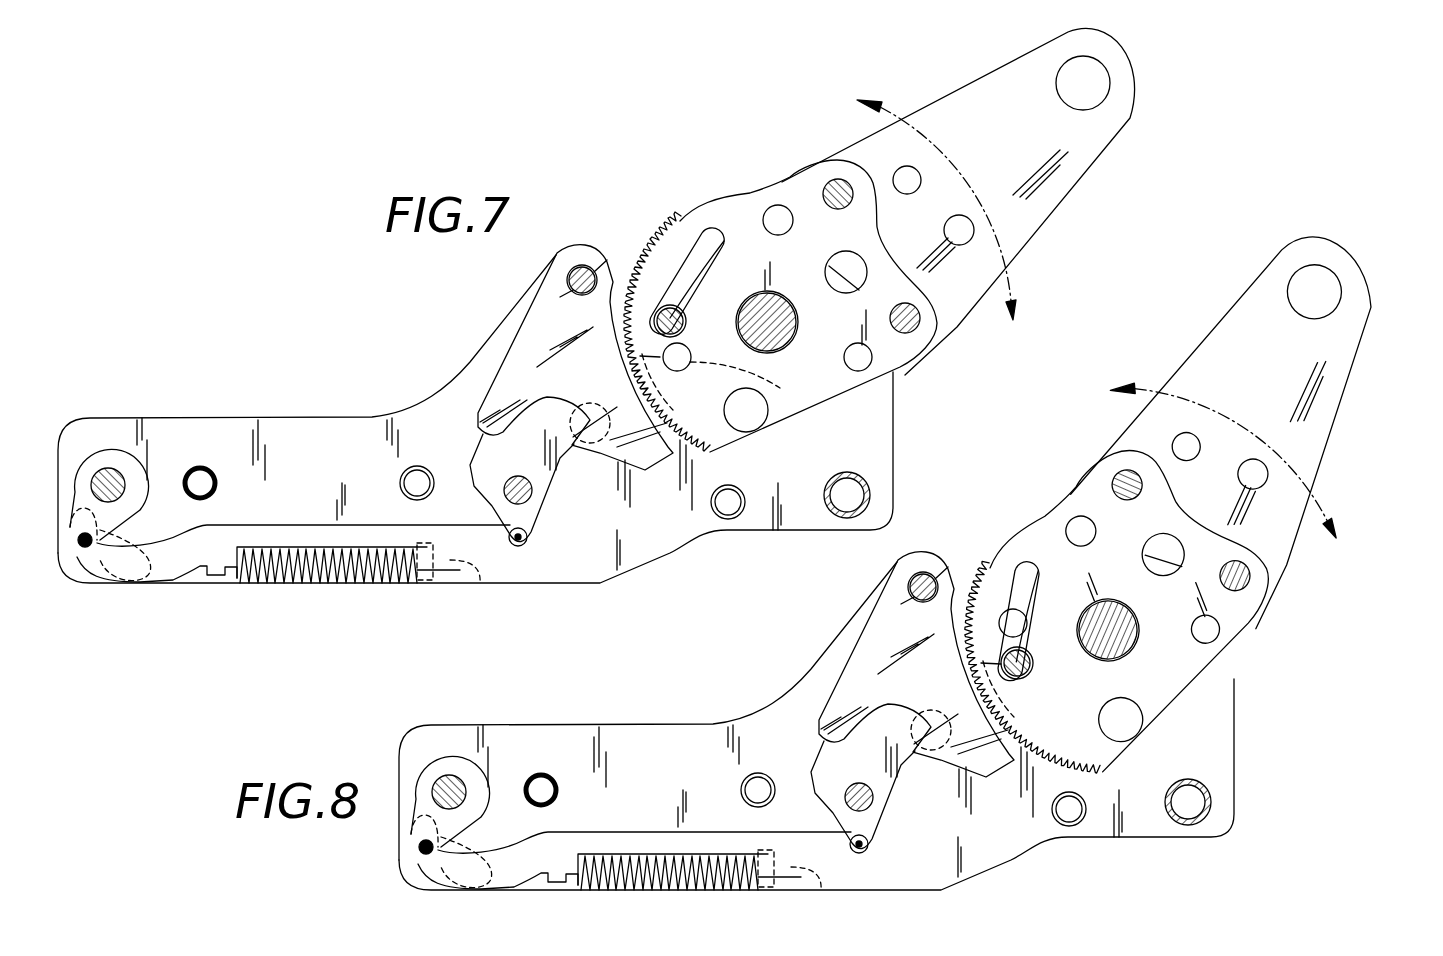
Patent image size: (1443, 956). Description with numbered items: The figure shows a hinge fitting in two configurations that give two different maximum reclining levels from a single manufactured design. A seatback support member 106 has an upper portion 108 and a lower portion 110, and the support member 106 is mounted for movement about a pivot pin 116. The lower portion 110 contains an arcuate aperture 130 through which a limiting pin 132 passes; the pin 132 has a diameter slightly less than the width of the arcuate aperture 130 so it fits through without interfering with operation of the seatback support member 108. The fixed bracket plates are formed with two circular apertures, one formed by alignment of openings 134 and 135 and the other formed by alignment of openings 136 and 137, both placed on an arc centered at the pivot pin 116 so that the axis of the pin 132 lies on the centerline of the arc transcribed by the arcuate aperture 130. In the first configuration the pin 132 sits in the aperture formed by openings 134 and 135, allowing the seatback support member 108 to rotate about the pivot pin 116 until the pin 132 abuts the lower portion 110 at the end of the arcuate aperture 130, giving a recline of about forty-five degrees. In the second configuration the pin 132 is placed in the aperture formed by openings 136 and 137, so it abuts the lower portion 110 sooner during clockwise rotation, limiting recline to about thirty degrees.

In FIG. 7, the seatback support member 106 is at (1093, 134).
In FIG. 8, the seatback support member 106 is at (1315, 351).
In FIG. 7, the upper portion 108 is at (907, 95).
In FIG. 8, the upper portion 108 is at (1143, 318).
In FIG. 7, the lower portion 110 is at (753, 217).
In FIG. 8, the lower portion 110 is at (1158, 592).
In FIG. 7, the pivot pin 116 is at (798, 319).
In FIG. 8, the pivot pin 116 is at (1112, 638).
In FIG. 7, the arcuate aperture 130 is at (672, 232).
In FIG. 8, the arcuate aperture 130 is at (1002, 550).
In FIG. 7, the limiting pin 132 is at (686, 316).
In FIG. 8, the limiting pin 132 is at (1028, 652).
In FIG. 7, the opening 134 is at (686, 300).
In FIG. 8, the opening 134 is at (1013, 622).
In FIG. 7, the opening 135 is at (712, 245).
In FIG. 8, the opening 135 is at (1018, 621).
In FIG. 7, the opening 136 is at (759, 384).
In FIG. 8, the opening 136 is at (1020, 700).
In FIG. 8, the opening 137 is at (1031, 670).